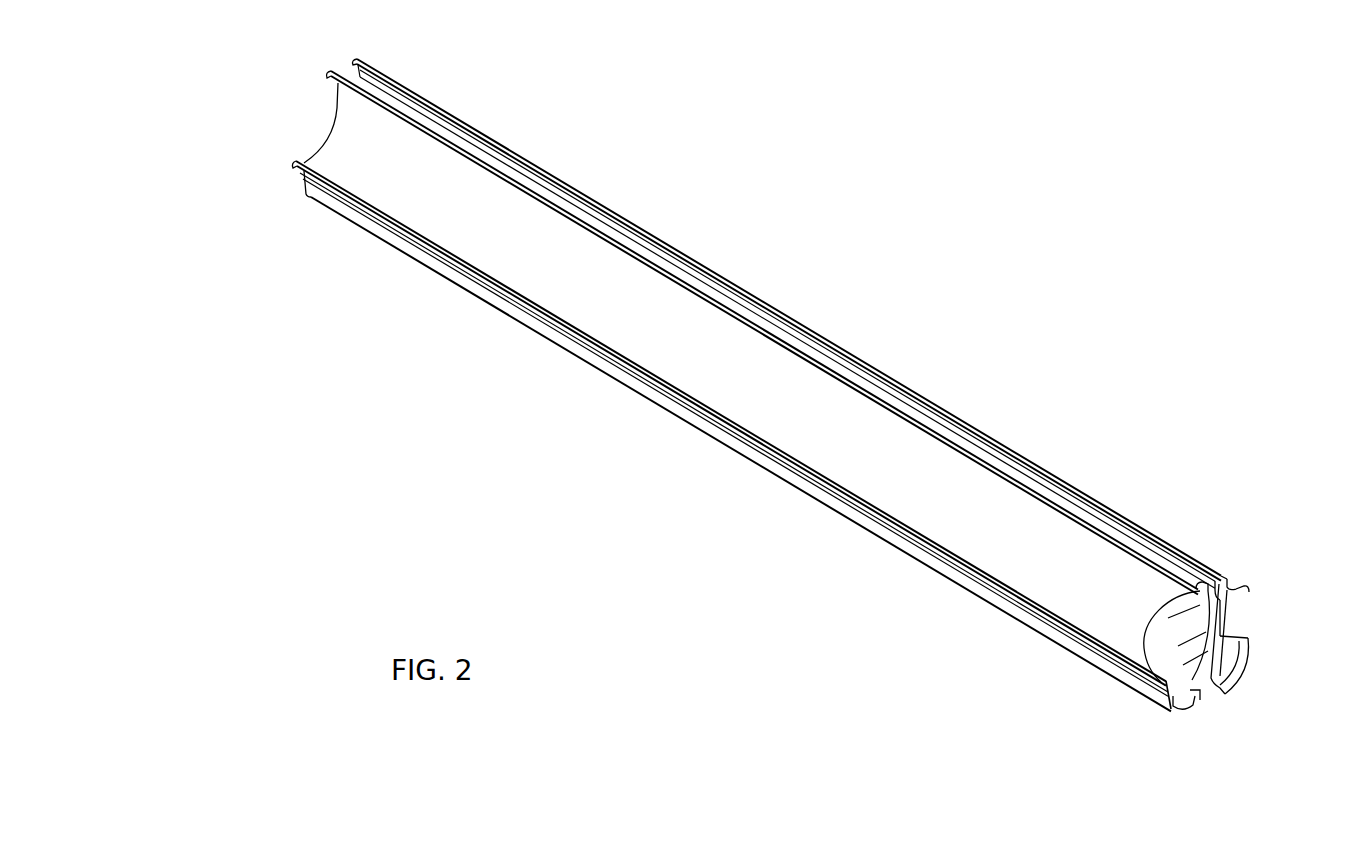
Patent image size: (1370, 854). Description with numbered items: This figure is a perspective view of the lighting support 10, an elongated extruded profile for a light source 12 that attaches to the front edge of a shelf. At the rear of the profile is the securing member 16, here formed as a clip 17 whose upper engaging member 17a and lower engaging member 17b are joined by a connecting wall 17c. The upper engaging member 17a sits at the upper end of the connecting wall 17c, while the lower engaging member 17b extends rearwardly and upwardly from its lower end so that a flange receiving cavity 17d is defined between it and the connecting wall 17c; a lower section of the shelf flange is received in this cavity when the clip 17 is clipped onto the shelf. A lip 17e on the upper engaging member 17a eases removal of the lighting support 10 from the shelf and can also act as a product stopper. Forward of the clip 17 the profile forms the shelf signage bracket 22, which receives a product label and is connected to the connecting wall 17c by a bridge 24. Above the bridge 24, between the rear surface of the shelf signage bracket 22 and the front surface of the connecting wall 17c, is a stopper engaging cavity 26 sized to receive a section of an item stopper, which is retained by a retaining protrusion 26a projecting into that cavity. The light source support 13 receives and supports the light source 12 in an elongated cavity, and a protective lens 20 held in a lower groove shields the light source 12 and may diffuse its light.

The lighting support 10 is at (1009, 340).
The light source 12 is at (1188, 694).
The light source support 13 is at (1148, 707).
The securing member 16 is at (1234, 570).
The clip 17 is at (1252, 632).
The upper engaging member 17a is at (1238, 576).
The lower engaging member 17b is at (1232, 660).
The connecting wall 17c is at (1222, 632).
The flange receiving cavity 17d is at (1245, 628).
The lip 17e is at (1209, 573).
The protective lens 20 is at (1176, 700).
The shelf signage bracket 22 is at (1013, 566).
The bridge 24 is at (1206, 648).
The stopper engaging cavity 26 is at (1197, 572).
The retaining protrusion 26a is at (1125, 636).